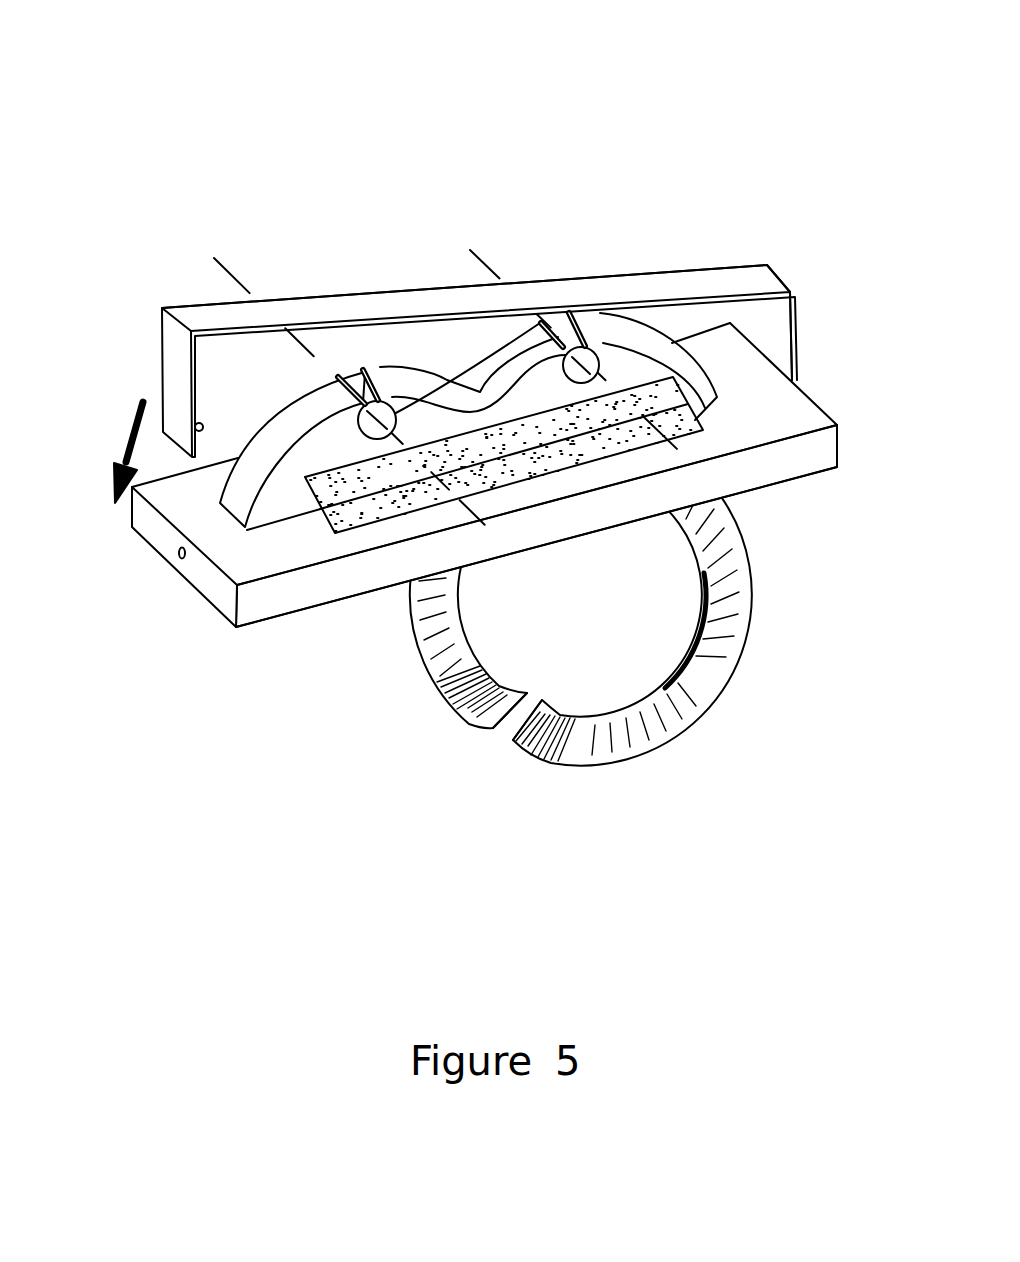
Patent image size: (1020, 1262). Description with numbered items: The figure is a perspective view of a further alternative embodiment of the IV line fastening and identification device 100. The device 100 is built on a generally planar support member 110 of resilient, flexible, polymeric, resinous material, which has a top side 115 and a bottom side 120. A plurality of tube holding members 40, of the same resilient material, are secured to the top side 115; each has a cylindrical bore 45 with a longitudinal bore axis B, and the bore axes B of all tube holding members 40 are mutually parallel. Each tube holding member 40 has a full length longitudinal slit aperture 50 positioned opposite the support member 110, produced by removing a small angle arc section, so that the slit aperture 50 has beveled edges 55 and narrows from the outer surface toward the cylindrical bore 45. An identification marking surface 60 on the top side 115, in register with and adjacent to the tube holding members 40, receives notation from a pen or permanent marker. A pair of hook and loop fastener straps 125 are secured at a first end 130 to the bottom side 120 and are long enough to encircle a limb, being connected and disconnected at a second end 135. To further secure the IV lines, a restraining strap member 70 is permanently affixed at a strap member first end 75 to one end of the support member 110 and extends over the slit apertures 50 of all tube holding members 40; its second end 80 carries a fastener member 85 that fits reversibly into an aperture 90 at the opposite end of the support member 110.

The tube holding member 40 is at (287, 427).
The cylindrical bore 45 is at (480, 390).
The longitudinal slit aperture 50 is at (350, 362).
The beveled edges 55 is at (541, 322).
The identification marking surface 60 is at (363, 523).
The restraining strap member 70 is at (585, 288).
The strap member first end 75 is at (798, 356).
The strap member second end 80 is at (175, 370).
The fastener member 85 is at (200, 431).
The aperture 90 is at (180, 555).
The IV line fastening and identification device 100 is at (742, 156).
The support member 110 is at (813, 453).
The top side 115 is at (783, 413).
The bottom side 120 is at (267, 625).
The hook and loop fastener straps 125 is at (448, 629).
The first end 130 is at (642, 520).
The second end 135 is at (600, 762).
The longitudinal bore axis B is at (458, 390).